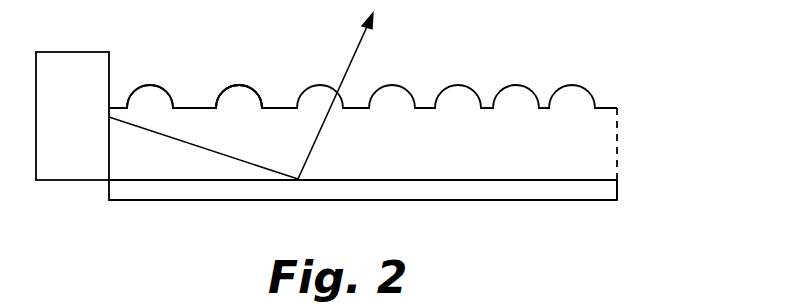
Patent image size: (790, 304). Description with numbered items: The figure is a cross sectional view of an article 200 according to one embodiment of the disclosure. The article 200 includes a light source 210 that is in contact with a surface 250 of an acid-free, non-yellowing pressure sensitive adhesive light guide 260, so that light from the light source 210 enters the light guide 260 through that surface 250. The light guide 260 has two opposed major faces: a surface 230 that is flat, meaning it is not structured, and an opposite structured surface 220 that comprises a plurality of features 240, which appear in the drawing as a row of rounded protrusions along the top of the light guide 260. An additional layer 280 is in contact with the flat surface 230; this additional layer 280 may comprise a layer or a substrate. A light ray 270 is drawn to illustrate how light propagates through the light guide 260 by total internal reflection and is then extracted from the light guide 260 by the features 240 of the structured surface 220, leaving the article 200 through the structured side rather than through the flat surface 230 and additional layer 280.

The article 200 is at (591, 54).
The light source 210 is at (72, 65).
The structured surface 220 is at (193, 104).
The features 240 is at (243, 93).
The flat surface 230 is at (152, 181).
The surface 250 is at (109, 163).
The acid-free, non-yellowing pressure sensitive adhesive light guide 260 is at (620, 148).
The light ray 270 is at (305, 157).
The additional layer 280 is at (620, 190).